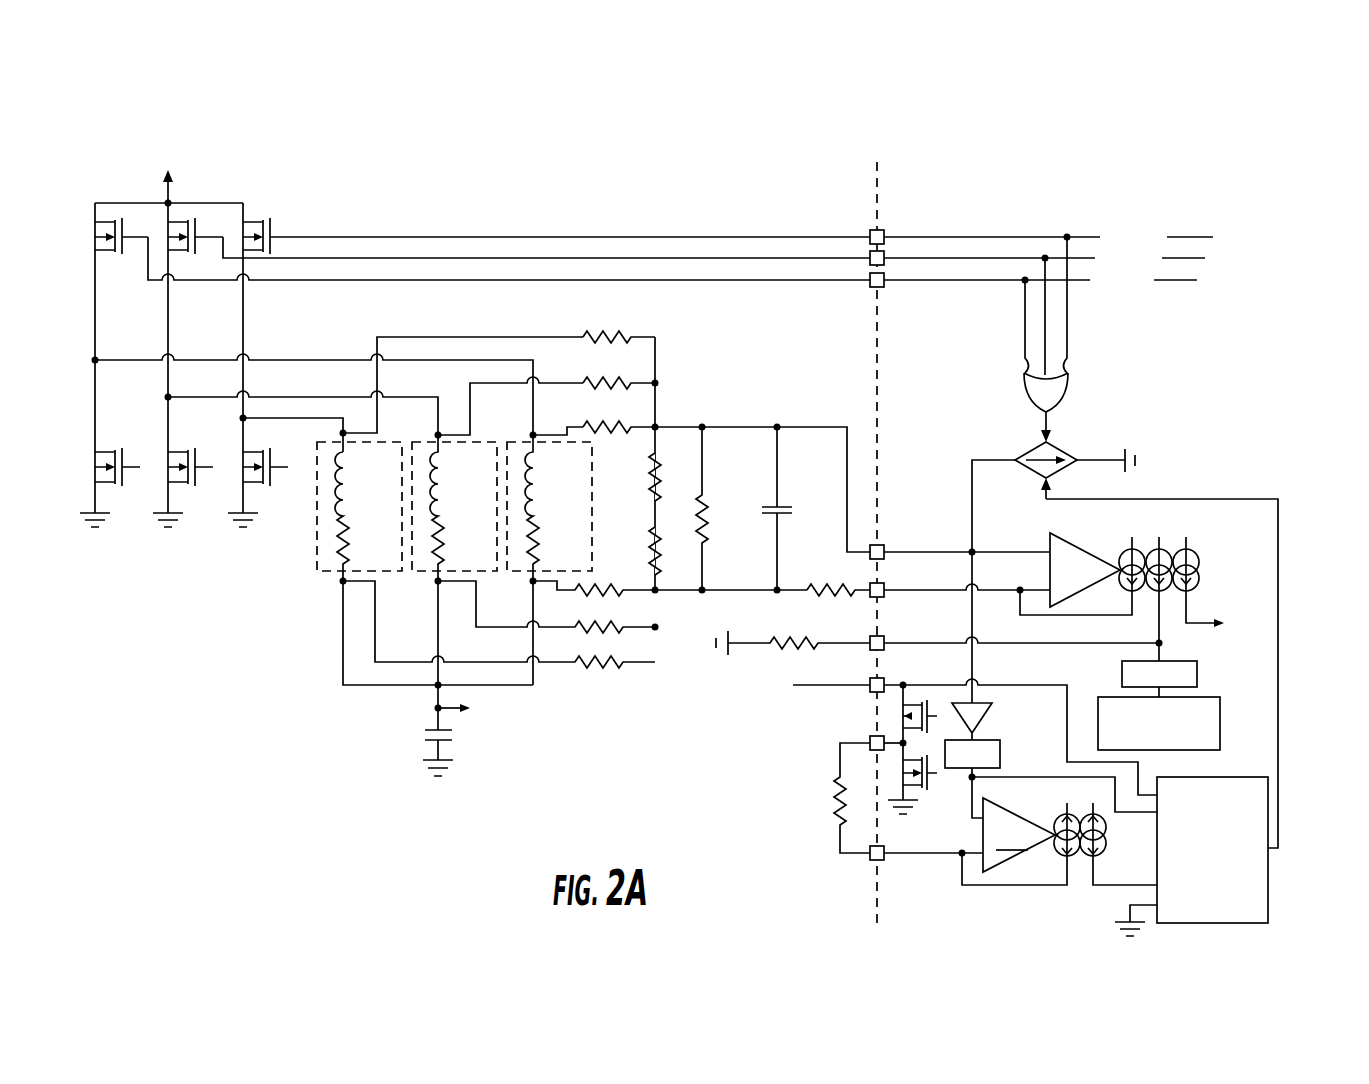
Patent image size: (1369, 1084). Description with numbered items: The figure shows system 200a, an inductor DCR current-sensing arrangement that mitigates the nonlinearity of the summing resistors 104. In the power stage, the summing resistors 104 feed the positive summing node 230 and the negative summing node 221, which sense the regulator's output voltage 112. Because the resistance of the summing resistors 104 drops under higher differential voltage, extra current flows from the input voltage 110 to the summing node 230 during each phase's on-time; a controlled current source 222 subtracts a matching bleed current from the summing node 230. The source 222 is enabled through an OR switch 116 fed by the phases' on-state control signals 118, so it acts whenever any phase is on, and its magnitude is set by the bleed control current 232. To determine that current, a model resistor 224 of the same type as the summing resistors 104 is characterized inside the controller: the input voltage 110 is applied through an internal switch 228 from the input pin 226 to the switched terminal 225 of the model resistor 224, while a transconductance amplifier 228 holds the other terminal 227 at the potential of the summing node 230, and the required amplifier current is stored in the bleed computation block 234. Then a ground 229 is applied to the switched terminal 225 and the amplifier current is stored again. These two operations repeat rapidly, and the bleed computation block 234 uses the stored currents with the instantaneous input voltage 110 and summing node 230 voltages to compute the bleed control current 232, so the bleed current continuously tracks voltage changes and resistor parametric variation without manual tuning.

The system 200a is at (138, 92).
The RSUM resistors 104 is at (583, 404).
The output voltage 112 is at (500, 732).
The VVIN 110 is at (868, 690).
The OR switch 116 is at (1024, 392).
The on-state control signal 118 is at (1213, 237).
The ISUMN node 221 is at (868, 590).
The controlled current source 222 is at (1060, 450).
The model resistor RMODEL 224 is at (796, 827).
The switched terminal 225 is at (868, 748).
The VIN 226 is at (871, 692).
The other terminal 227 is at (868, 856).
The transconductance amplifier 228 is at (930, 726).
The ground 229 is at (895, 818).
The ISUMP node 230 is at (977, 552).
The IBLEEDCONTROL 232 is at (1313, 561).
The IBLEED COMPUTATION 234 is at (1229, 896).